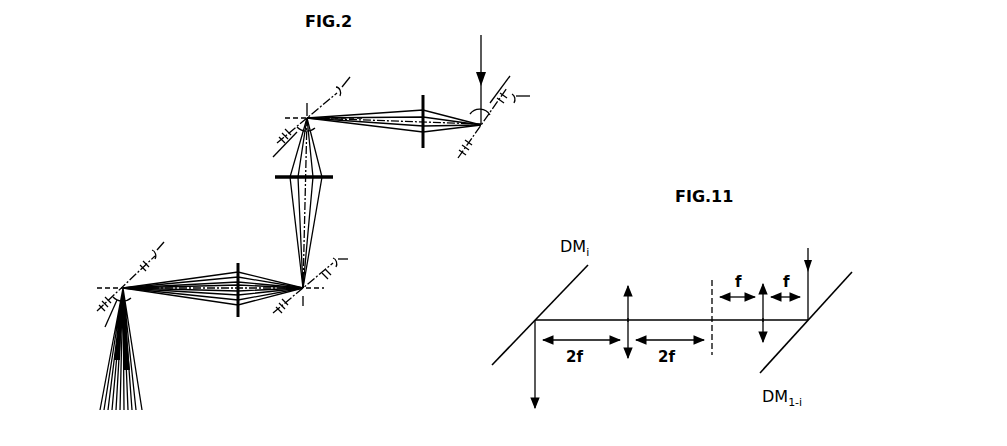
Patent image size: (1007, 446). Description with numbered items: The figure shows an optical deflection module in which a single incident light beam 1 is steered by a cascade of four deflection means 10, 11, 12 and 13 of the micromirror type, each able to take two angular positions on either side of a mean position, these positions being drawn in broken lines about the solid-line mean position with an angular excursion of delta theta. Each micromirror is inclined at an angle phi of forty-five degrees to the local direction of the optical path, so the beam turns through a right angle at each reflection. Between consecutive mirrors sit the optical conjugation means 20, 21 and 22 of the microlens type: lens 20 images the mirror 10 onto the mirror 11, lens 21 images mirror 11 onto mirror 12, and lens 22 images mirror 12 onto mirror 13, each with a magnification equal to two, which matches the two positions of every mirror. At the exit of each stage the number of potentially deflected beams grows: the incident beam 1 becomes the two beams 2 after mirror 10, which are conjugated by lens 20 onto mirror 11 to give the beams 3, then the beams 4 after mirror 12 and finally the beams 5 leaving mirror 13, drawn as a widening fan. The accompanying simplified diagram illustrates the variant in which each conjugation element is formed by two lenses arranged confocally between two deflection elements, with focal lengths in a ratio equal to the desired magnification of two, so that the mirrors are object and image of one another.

The incident light beam 1 is at (480, 77).
The deflected beams 2 is at (440, 137).
The deflected beams 3 is at (320, 153).
The deflected beams 4 is at (267, 305).
The deflected beams 5 is at (133, 347).
The deflection means 10 is at (485, 135).
The deflection means 11 is at (275, 135).
The deflection means 12 is at (327, 283).
The deflection means 13 is at (127, 278).
The optical conjugation means 20 is at (422, 92).
The optical conjugation means 21 is at (327, 182).
The optical conjugation means 22 is at (239, 252).